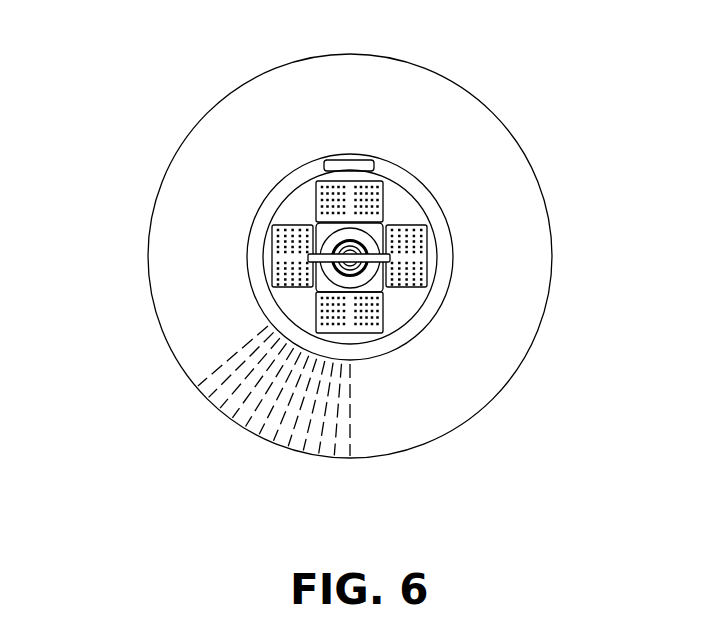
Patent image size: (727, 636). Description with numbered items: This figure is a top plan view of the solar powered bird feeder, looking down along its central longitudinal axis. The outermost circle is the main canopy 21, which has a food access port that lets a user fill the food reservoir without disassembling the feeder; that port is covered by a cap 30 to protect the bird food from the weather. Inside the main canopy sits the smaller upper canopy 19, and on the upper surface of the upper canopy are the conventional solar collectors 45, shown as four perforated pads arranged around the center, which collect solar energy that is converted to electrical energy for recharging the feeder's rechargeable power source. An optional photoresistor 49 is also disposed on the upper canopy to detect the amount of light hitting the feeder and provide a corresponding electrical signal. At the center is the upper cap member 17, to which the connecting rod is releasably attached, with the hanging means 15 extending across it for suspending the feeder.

The main canopy 21 is at (372, 87).
The cap 30 is at (378, 157).
The upper canopy 19 is at (406, 203).
The upper cap member 17 is at (326, 234).
The hanging means 15 is at (306, 257).
The solar collector 45 is at (416, 260).
The photoresistor 49 is at (298, 305).